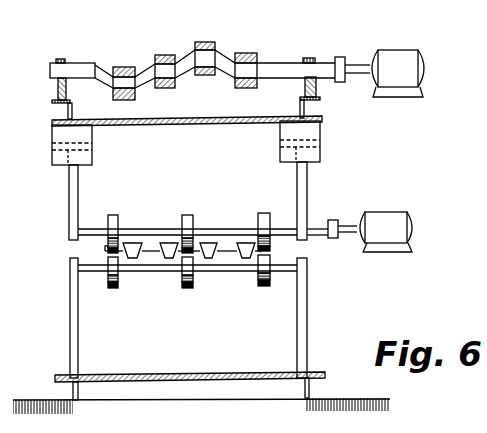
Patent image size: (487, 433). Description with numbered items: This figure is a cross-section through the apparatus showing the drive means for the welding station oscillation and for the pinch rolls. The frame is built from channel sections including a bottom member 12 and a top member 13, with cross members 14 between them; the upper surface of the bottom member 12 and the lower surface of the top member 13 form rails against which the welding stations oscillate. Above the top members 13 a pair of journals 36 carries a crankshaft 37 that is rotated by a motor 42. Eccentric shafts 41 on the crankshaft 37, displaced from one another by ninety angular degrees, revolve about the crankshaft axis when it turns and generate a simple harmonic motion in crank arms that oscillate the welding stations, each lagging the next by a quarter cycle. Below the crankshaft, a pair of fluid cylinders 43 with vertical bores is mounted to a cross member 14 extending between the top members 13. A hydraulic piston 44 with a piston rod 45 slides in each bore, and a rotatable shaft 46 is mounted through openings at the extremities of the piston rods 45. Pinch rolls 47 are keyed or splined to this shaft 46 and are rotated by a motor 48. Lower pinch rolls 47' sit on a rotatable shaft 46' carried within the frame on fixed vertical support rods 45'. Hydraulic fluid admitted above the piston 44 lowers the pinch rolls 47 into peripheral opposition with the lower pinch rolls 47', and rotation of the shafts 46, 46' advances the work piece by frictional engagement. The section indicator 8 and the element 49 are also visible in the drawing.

The section line 8 is at (307, 428).
The bottom member 12 is at (79, 385).
The top member 13 is at (73, 113).
The cross member 14 is at (197, 118).
The journal 36 is at (58, 88).
The crankshaft 37 is at (78, 64).
The eccentric shaft 41 is at (122, 80).
The motor 42 is at (388, 75).
The fluid cylinder 43 is at (56, 137).
The hydraulic piston 44 is at (52, 150).
The piston rod 45 is at (184, 201).
The fixed vertical support rod 45' is at (183, 318).
The rotatable shaft 46 is at (203, 230).
The rotatable shaft 46' is at (187, 280).
The pinch roll 47 is at (198, 217).
The lower pinch roll 47' is at (202, 282).
The motor 48 is at (376, 235).
The base 49 is at (194, 426).